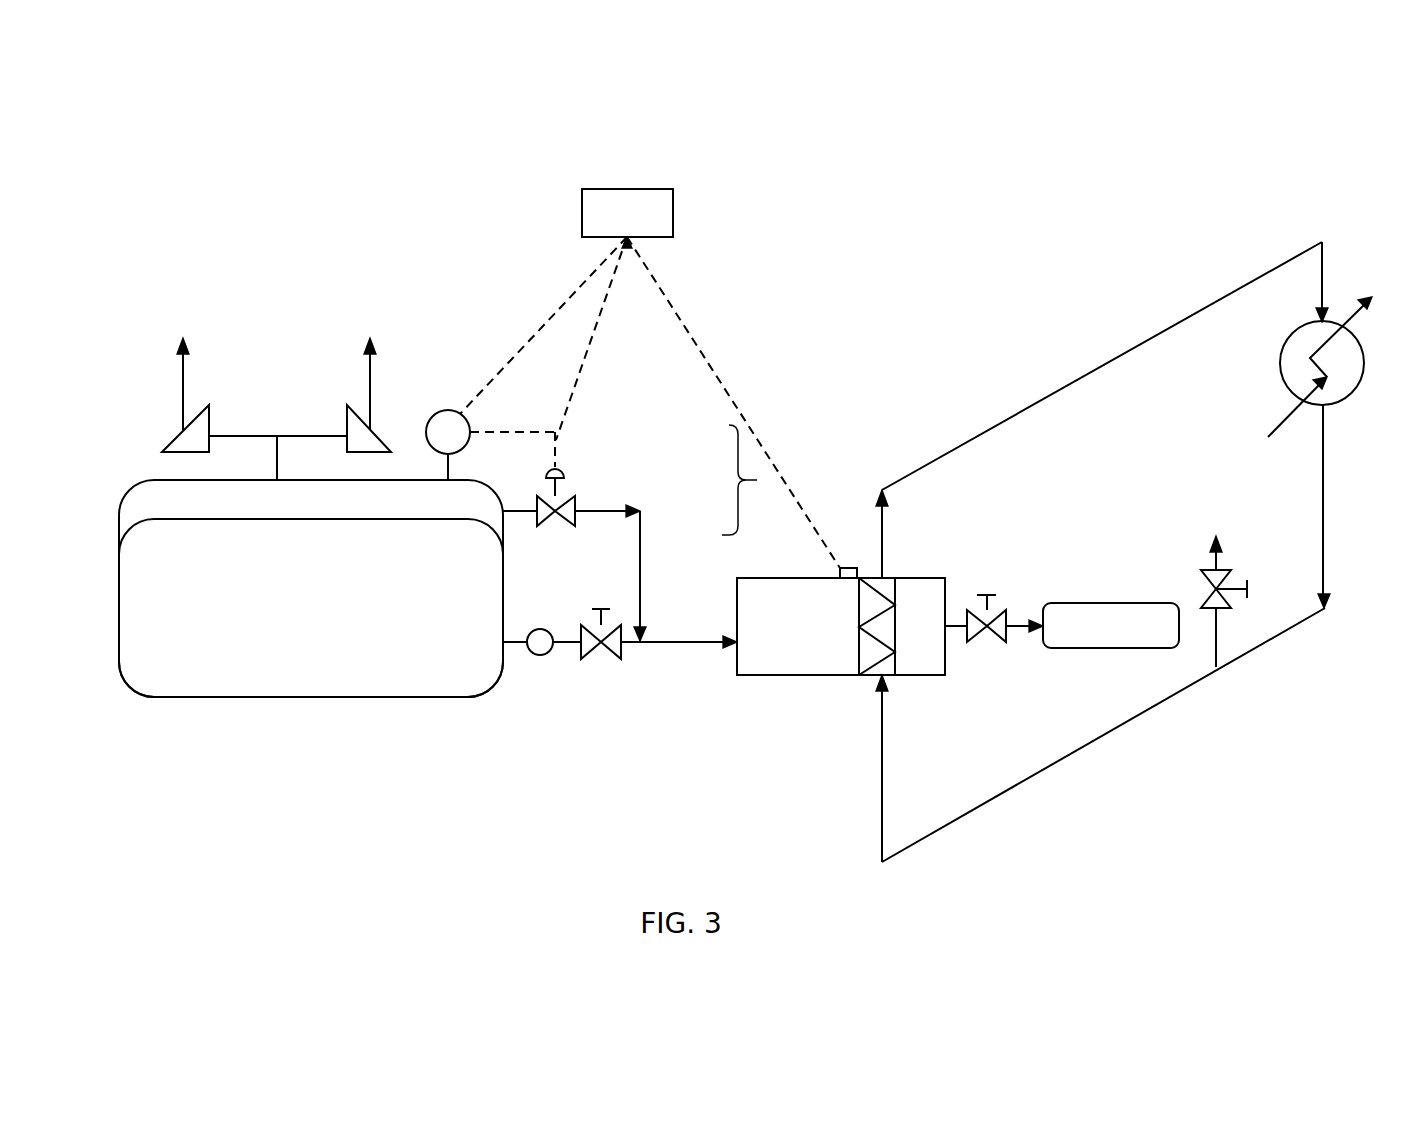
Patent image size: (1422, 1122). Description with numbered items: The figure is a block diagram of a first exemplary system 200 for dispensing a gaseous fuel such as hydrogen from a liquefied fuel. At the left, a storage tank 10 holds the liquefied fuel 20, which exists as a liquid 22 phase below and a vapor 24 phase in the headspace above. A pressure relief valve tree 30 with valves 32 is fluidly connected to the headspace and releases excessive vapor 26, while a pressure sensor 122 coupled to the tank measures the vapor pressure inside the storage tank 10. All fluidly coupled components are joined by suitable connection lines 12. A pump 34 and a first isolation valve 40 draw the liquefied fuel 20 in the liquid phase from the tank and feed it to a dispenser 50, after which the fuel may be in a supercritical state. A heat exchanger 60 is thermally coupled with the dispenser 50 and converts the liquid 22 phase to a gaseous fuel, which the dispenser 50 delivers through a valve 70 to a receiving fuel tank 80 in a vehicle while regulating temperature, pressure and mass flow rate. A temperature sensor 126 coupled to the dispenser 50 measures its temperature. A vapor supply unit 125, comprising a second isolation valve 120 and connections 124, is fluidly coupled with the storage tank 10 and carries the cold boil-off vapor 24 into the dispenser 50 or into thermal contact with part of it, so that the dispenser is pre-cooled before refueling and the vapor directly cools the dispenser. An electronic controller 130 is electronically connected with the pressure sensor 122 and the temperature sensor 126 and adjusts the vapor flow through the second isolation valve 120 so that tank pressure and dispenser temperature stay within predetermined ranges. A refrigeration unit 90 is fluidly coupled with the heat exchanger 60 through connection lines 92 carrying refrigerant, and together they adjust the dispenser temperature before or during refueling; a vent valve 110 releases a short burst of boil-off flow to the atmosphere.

The storage tank 10 is at (282, 605).
The connection lines 12 is at (510, 644).
The liquefied fuel 20 is at (125, 527).
The liquid 22 is at (285, 673).
The vapor 24 is at (152, 497).
The excessive vapor 26 is at (184, 332).
The pressure relief valve tree 30 is at (264, 435).
The valves 32 is at (176, 435).
The pump 34 is at (541, 655).
The first isolation valve 40 is at (605, 648).
The dispenser 50 is at (790, 667).
The heat exchanger 60 is at (875, 669).
The flow control valve 70 is at (1000, 643).
The receiving fuel tank 80 is at (1143, 648).
The refrigeration unit 90 is at (1360, 382).
The connection lines 92 is at (1288, 251).
The vent valve 110 is at (1236, 608).
The second isolation valve 120 is at (588, 482).
The pressure sensor 122 is at (467, 406).
The connections 124 is at (642, 567).
The vapor supply unit 125 is at (738, 452).
The temperature sensor 126 is at (847, 566).
The electronic controller 130 is at (673, 212).
The first exemplary system 200 is at (298, 98).